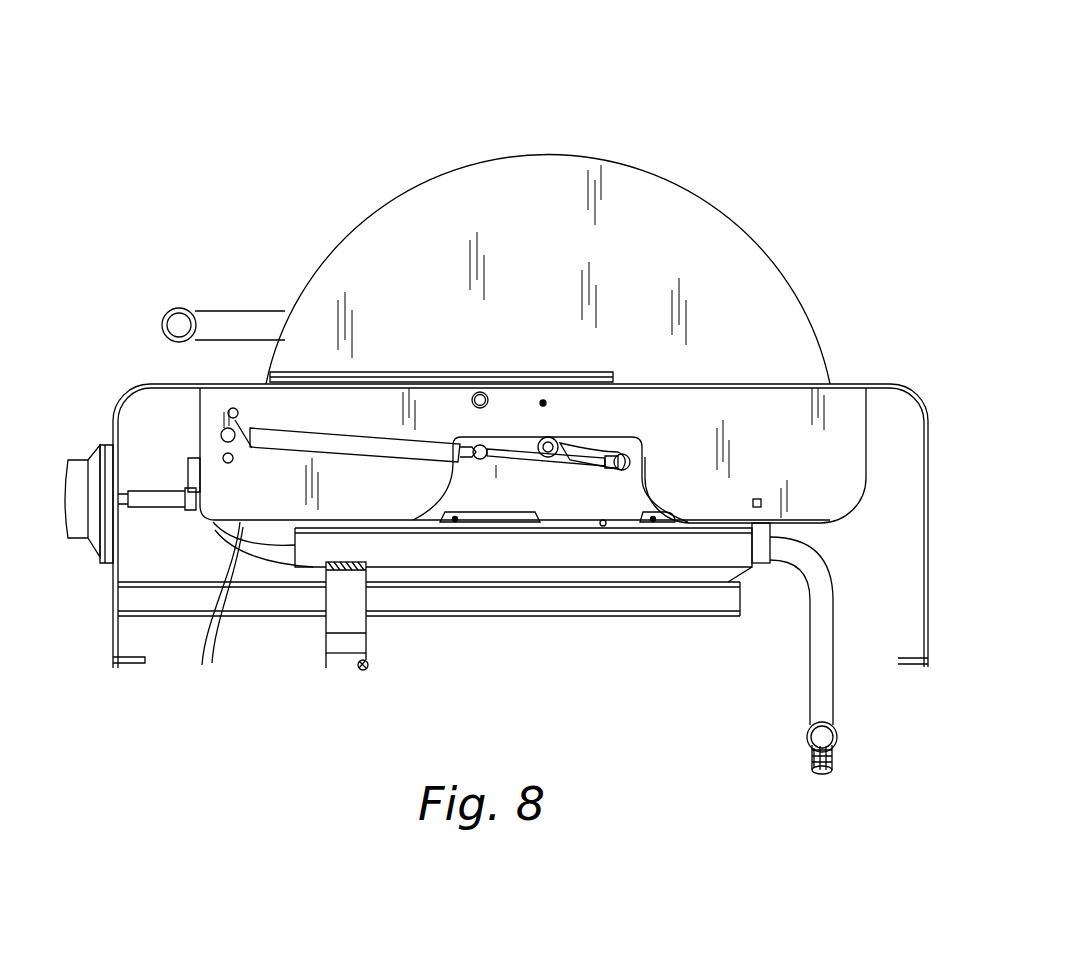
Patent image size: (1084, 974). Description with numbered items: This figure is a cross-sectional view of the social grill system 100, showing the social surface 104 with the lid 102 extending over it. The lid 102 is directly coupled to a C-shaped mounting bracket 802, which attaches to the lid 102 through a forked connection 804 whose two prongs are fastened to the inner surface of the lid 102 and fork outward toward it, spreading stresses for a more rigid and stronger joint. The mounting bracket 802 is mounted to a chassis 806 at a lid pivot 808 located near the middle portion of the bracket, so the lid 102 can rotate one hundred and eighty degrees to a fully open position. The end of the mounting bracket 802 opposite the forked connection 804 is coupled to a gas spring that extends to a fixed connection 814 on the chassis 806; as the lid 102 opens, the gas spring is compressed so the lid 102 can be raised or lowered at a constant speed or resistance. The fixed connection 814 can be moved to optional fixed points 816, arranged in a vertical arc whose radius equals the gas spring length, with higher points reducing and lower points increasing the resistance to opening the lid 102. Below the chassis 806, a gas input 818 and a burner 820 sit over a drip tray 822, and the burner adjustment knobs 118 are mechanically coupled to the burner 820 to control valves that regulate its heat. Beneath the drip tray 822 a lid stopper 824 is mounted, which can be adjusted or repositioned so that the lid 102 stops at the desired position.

The social grill system 100 is at (134, 138).
The lid 102 is at (677, 215).
The social surface 104 is at (920, 384).
The burner adjustment knobs 118 is at (80, 540).
The mounting bracket 802 is at (600, 470).
The forked connection 804 is at (517, 362).
The chassis 806 is at (480, 480).
The lid pivot 808 is at (557, 440).
The fixed connection 814 is at (222, 434).
The optional fixed points 816 is at (245, 609).
The gas input 818 is at (827, 697).
The burner 820 is at (743, 553).
The drip tray 822 is at (742, 605).
The lid stopper 824 is at (364, 672).